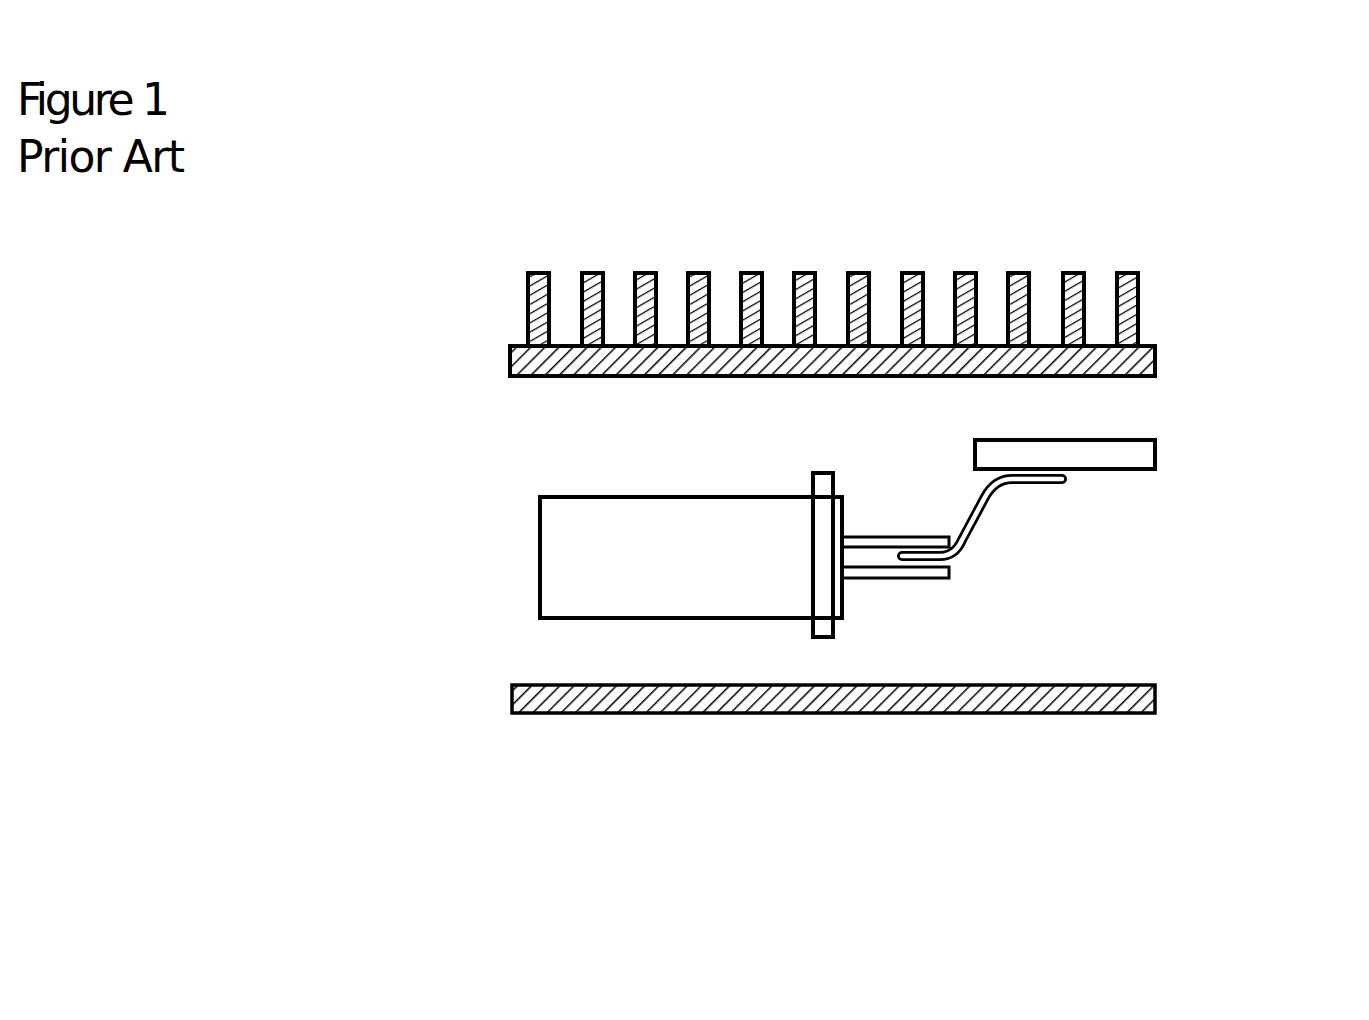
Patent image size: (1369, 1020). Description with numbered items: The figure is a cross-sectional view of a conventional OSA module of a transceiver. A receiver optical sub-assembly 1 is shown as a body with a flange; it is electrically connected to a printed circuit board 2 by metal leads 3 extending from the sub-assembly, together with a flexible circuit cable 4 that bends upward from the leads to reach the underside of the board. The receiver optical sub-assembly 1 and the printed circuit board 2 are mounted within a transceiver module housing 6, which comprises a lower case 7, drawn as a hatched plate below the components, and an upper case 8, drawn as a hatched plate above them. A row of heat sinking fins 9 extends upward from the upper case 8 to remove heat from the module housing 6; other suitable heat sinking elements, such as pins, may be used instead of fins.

The receiver optical sub-assembly 1 is at (548, 548).
The printed circuit board 2 is at (1155, 453).
The metal leads 3 is at (887, 583).
The flexible circuit cable 4 is at (993, 510).
The transceiver module housing 6 is at (489, 222).
The lower case 7 is at (512, 705).
The upper case 8 is at (510, 365).
The heat sinking fins 9 is at (917, 275).